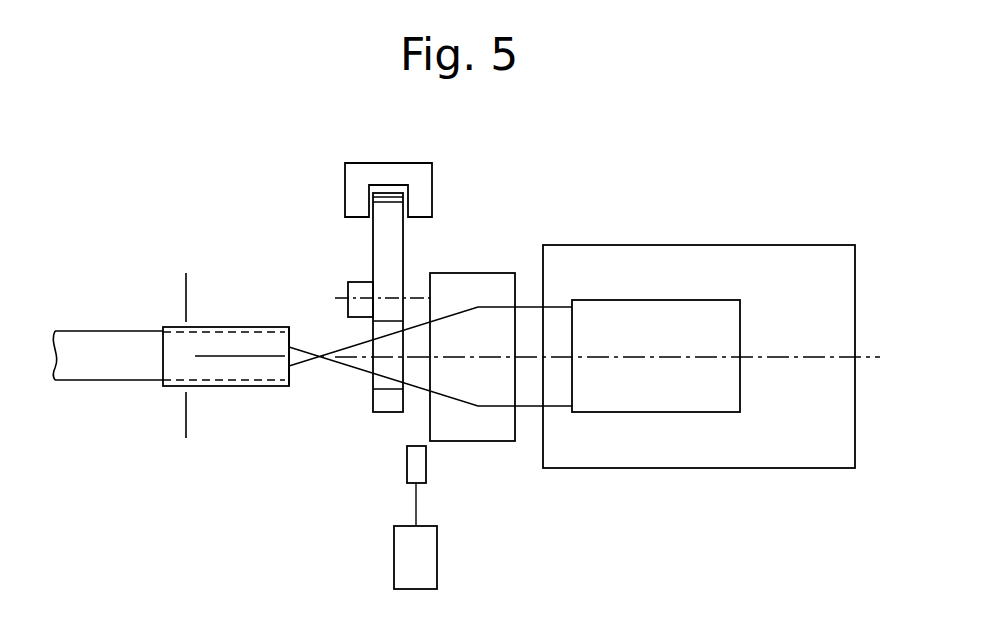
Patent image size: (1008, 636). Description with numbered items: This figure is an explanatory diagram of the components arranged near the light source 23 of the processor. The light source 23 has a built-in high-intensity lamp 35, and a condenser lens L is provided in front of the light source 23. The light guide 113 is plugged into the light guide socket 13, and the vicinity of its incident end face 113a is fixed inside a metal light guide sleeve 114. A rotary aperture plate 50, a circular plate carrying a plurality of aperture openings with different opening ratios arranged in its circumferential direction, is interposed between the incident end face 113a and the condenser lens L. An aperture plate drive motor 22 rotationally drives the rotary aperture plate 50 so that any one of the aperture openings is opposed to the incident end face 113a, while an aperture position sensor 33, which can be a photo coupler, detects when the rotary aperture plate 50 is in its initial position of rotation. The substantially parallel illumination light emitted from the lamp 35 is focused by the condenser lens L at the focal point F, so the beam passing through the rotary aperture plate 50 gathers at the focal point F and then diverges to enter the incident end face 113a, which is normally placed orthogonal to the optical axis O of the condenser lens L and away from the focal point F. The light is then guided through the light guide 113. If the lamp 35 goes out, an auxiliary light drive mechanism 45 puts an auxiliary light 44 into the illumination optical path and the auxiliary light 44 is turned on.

The light guide 113 is at (127, 370).
The light guide socket 13 is at (193, 388).
The incident end face 113a is at (296, 373).
The light guide sleeve 114 is at (218, 340).
The focal point F is at (323, 352).
The aperture position sensor 33 is at (357, 177).
The rotary aperture plate 50 is at (368, 247).
The aperture plate drive motor 22 is at (355, 285).
The condenser lens L is at (475, 282).
The lamp 35 is at (642, 317).
The light source 23 is at (760, 260).
The optical axis O is at (619, 358).
The auxiliary light 44 is at (408, 460).
The auxiliary light drive mechanism 45 is at (400, 543).